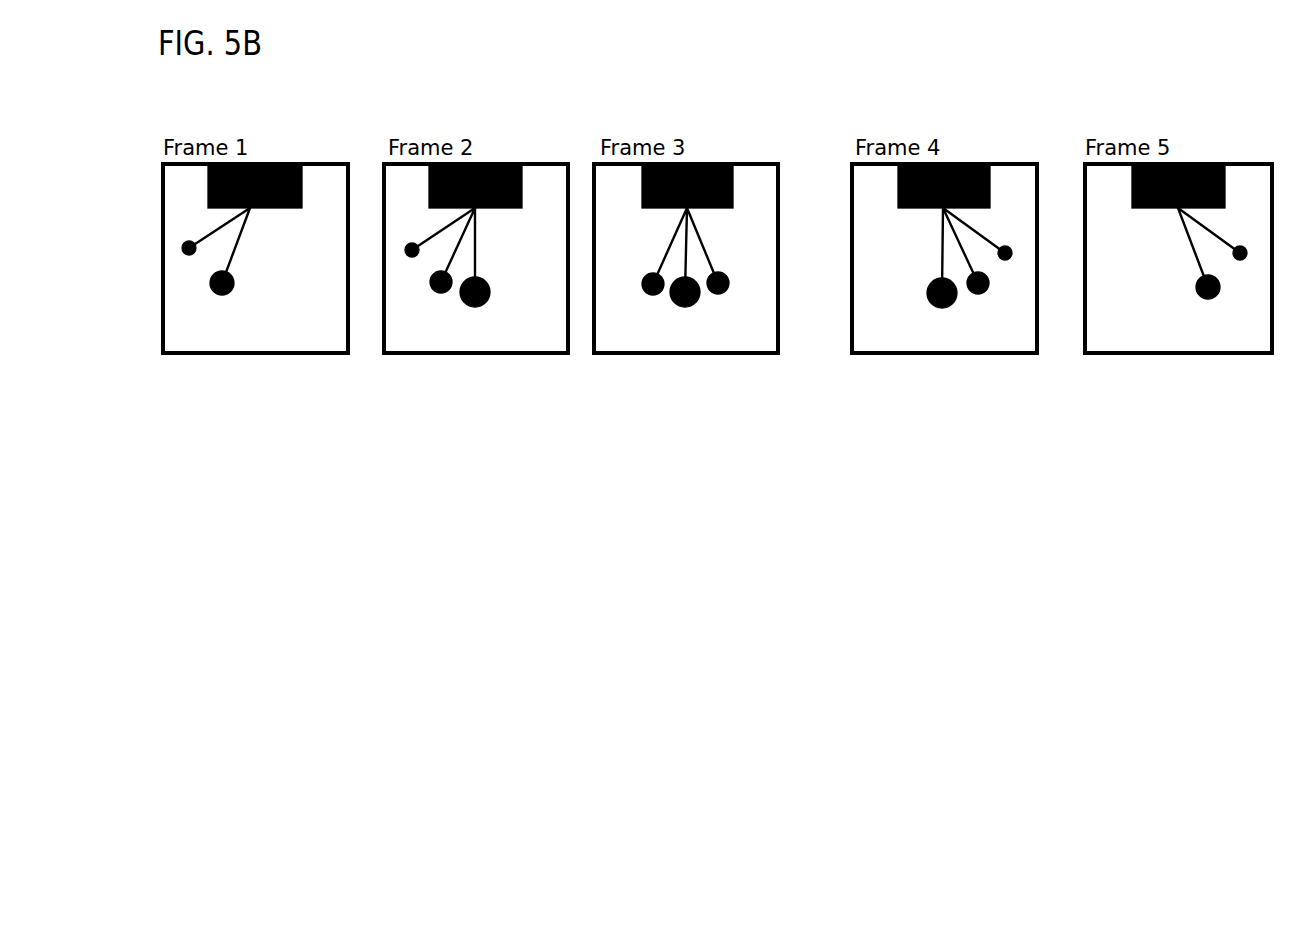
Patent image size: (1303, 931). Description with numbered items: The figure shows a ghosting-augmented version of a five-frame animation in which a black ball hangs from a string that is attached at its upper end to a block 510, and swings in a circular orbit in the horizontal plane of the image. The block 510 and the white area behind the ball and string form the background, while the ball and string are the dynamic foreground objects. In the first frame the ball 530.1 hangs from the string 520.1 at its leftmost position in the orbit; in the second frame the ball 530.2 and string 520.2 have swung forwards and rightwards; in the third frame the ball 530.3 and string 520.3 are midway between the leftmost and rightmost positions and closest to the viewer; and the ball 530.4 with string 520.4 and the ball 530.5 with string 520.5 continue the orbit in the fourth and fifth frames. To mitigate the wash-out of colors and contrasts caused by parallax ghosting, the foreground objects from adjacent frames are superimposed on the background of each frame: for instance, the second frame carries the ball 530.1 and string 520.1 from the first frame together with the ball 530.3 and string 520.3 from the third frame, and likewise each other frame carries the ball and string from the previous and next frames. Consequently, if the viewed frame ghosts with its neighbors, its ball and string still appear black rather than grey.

The block 510 is at (284, 164).
The string in Frame 1 520.1 is at (217, 238).
The string in Frame 2 520.2 is at (245, 243).
The string in Frame 3 520.3 is at (480, 250).
The string in Frame 4 520.4 is at (725, 240).
The string in Frame 5 520.5 is at (988, 248).
The ball in Frame 1 530.1 is at (180, 257).
The ball in Frame 2 530.2 is at (235, 290).
The ball in Frame 3 530.3 is at (480, 313).
The ball in Frame 4 530.4 is at (728, 297).
The ball in Frame 5 530.5 is at (1017, 263).